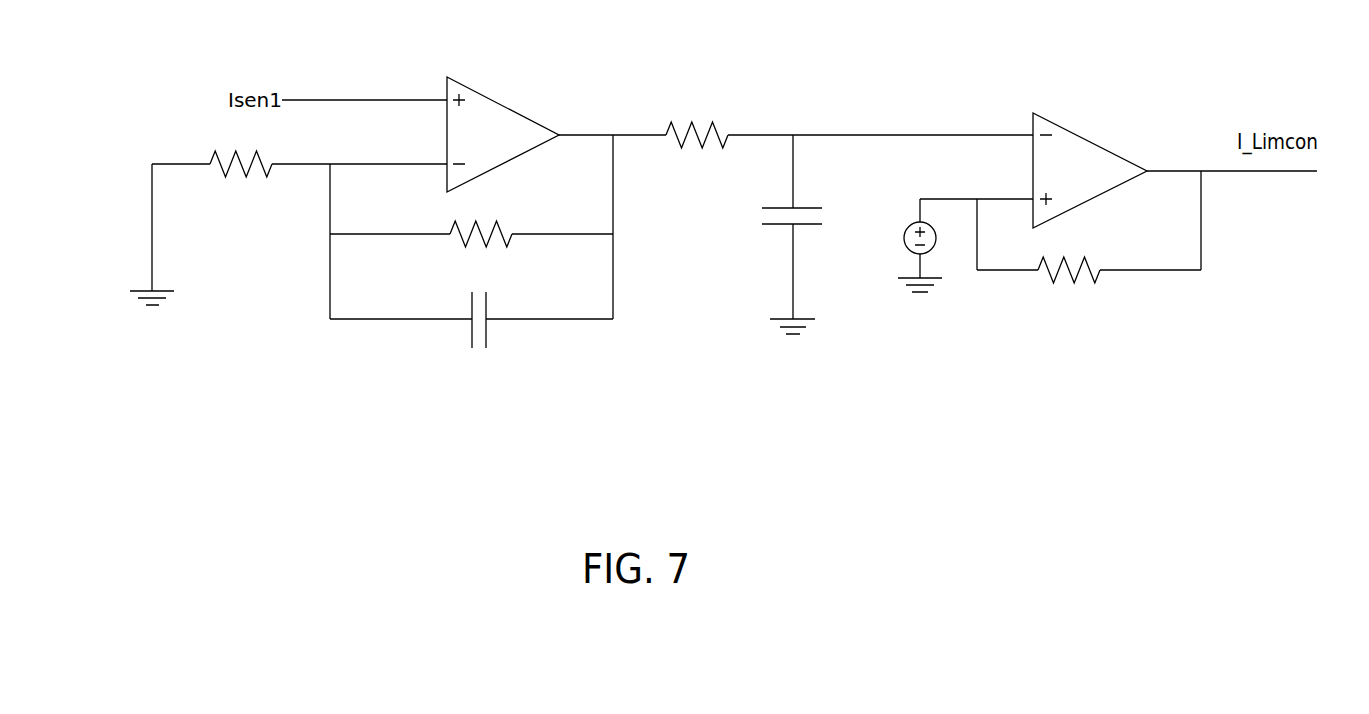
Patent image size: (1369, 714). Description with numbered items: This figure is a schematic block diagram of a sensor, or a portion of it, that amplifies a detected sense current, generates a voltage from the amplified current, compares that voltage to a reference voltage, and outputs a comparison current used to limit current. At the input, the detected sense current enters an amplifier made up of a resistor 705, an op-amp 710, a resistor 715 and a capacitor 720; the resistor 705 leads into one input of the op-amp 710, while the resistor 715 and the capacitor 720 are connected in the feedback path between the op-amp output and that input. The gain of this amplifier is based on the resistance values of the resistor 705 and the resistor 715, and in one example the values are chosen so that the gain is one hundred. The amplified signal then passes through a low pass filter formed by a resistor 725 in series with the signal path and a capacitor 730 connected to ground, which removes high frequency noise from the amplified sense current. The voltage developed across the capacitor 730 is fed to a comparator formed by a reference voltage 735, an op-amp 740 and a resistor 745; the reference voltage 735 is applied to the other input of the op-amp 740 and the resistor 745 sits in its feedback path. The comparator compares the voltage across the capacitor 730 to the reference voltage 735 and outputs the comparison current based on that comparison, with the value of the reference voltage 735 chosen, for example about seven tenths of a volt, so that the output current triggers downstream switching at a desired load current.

The resistor 705 is at (213, 145).
The op-amp 710 is at (446, 77).
The resistor 715 is at (455, 226).
The capacitor 720 is at (469, 315).
The resistor 725 is at (691, 125).
The capacitor 730 is at (777, 226).
The reference voltage 735 is at (914, 220).
The op-amp 740 is at (1031, 112).
The resistor 745 is at (1071, 284).